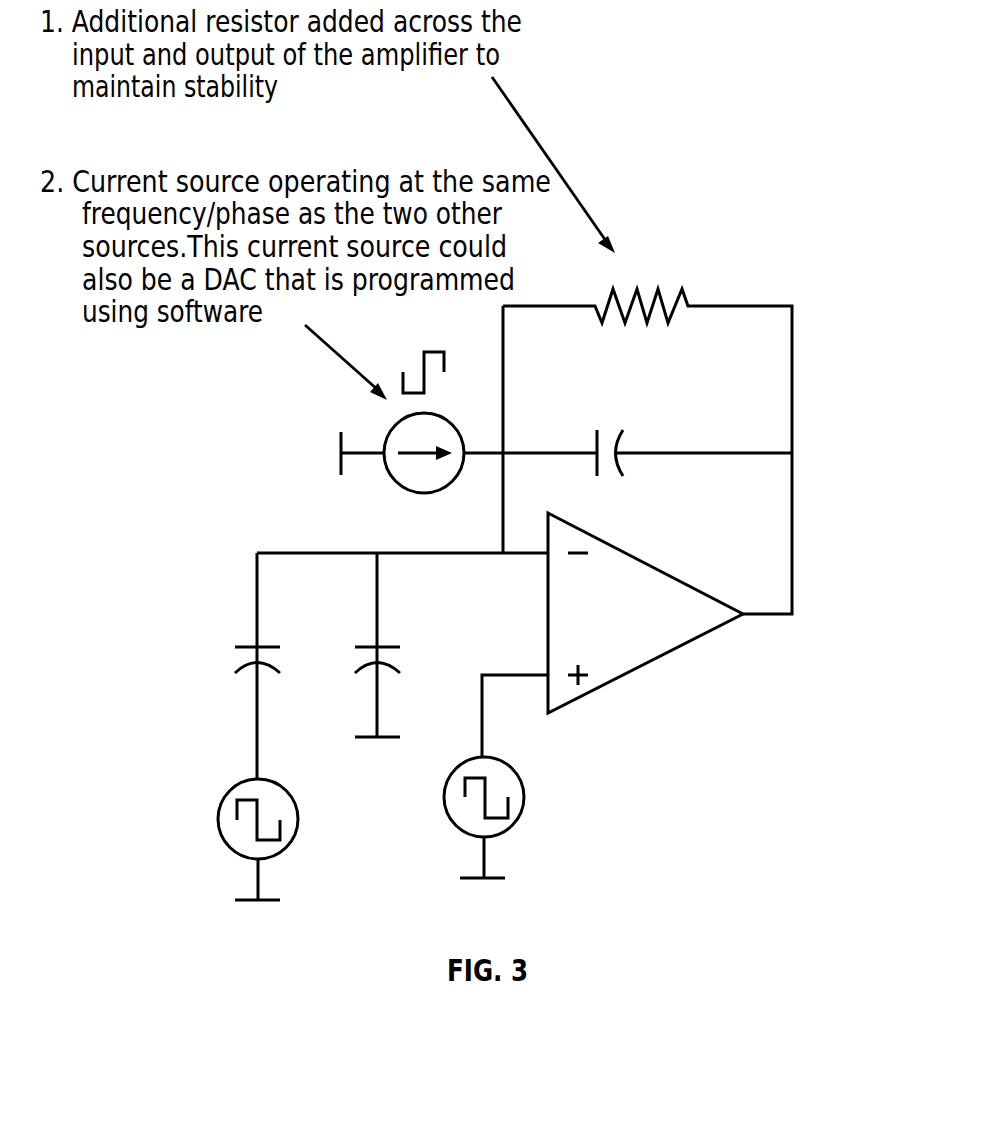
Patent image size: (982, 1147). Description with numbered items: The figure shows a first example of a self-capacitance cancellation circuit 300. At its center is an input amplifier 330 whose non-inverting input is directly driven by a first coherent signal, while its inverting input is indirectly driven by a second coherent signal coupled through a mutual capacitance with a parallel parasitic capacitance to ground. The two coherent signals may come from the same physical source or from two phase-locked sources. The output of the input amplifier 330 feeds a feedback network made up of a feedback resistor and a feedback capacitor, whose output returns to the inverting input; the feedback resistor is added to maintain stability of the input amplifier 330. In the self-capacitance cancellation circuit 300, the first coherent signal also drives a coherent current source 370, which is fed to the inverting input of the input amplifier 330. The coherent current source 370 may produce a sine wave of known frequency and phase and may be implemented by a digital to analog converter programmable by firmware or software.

The self-capacitance cancellation circuit 300 is at (792, 190).
The input amplifier 330 is at (637, 668).
The coherent current source 370 is at (399, 484).